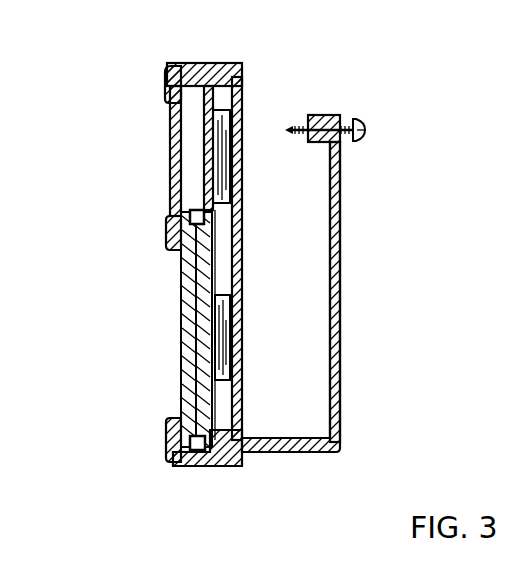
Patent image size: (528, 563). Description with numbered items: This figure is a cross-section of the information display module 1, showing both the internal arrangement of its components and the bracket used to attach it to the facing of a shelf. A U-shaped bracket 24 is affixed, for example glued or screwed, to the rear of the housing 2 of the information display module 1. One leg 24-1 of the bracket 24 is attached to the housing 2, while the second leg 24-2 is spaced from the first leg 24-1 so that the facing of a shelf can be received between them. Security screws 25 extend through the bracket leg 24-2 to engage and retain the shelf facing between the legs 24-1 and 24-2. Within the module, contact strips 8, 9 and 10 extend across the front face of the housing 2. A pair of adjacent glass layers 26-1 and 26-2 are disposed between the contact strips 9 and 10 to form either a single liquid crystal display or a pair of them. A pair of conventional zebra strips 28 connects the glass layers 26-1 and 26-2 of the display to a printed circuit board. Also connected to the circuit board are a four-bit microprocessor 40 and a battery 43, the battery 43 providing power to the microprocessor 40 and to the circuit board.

The information display module 1 is at (138, 289).
The housing 2 is at (190, 62).
The contact strip 8 is at (168, 84).
The contact strip 9 is at (167, 244).
The contact strip 10 is at (168, 439).
The U-shaped bracket 24 is at (346, 303).
The first leg 24-1 is at (244, 198).
The second leg 24-2 is at (338, 234).
The security screw 25 is at (349, 116).
The glass layer 26-1 is at (183, 344).
The glass layer 26-2 is at (183, 392).
The zebra strip 28 is at (192, 208).
The four-bit microprocessor 40 is at (229, 330).
The battery 43 is at (229, 163).